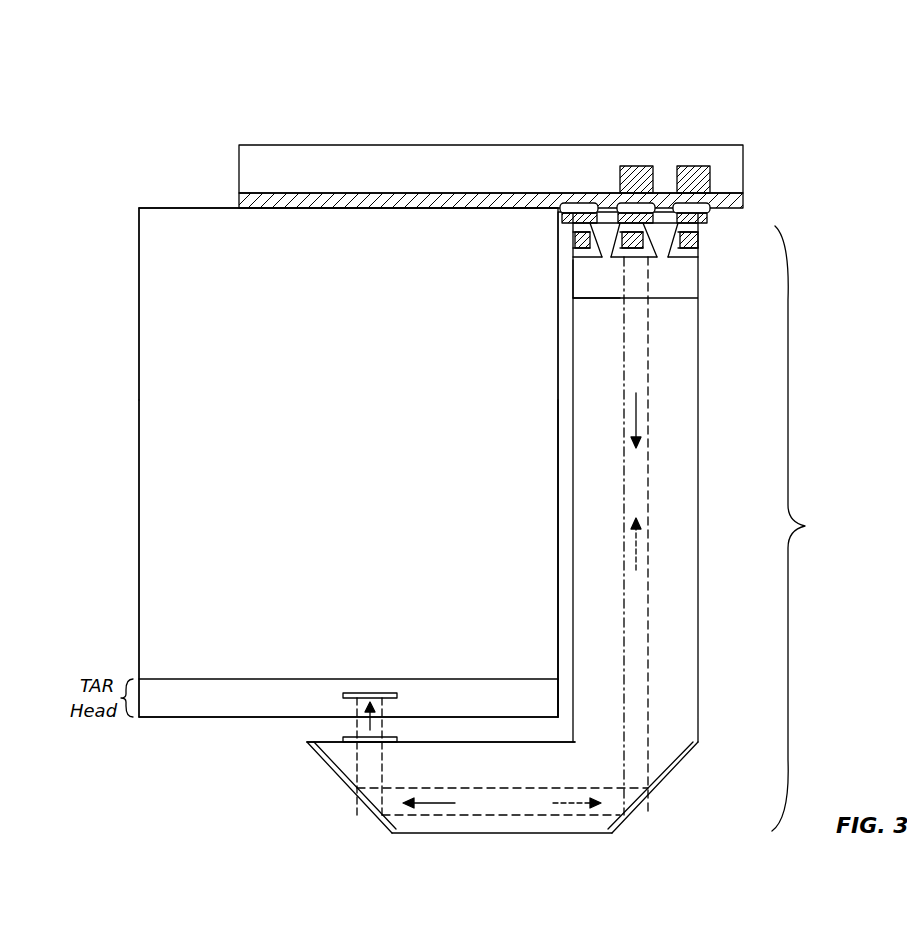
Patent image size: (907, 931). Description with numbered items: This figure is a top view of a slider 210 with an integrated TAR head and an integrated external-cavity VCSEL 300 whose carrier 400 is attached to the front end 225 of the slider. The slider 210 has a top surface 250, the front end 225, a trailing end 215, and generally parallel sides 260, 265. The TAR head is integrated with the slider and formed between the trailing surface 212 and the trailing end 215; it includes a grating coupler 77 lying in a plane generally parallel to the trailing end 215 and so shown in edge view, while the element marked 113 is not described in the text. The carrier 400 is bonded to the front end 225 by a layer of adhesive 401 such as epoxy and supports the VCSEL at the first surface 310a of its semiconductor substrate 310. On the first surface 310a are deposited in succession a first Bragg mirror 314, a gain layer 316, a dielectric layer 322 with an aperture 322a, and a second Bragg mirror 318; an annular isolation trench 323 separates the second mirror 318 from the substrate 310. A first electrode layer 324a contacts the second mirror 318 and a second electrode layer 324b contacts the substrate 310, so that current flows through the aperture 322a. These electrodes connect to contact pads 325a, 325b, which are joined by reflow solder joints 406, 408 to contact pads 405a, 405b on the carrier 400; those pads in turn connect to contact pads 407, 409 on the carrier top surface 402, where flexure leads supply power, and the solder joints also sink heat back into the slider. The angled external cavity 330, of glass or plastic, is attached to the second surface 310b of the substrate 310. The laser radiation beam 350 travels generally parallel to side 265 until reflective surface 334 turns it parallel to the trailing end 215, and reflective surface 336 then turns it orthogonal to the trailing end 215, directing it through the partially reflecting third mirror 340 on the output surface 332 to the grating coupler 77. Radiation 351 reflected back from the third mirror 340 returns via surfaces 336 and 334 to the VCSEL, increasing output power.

The slider 210 is at (348, 462).
The front end 225 is at (159, 207).
The top surface 250 is at (153, 303).
The side 260 is at (149, 490).
The trailing surface 212 is at (248, 678).
The trailing end 215 is at (227, 720).
The TAR head side 113 is at (530, 692).
The grating coupler 77 is at (370, 693).
The output surface 332 is at (327, 740).
The carrier 400 is at (500, 133).
The top surface 402 is at (357, 160).
The layer of adhesive 401 is at (238, 202).
The contact pad 405a is at (692, 166).
The contact pad 405b is at (622, 181).
The reflow solder joint 406 is at (636, 200).
The contact pad 407 is at (656, 196).
The reflow solder joint 408 is at (564, 203).
The contact pad 409 is at (705, 205).
The external-cavity VCSEL 300 is at (567, 445).
The semiconductor substrate 310 is at (690, 280).
The first surface 310a is at (575, 283).
The second surface 310b is at (590, 300).
The first Bragg mirror 314 is at (700, 256).
The gain layer 316 is at (700, 246).
The second Bragg mirror 318 is at (702, 226).
The dielectric layer 322 is at (598, 238).
The aperture 322a is at (665, 250).
The annular isolation trench 323 is at (600, 228).
The first electrode layer 324a is at (620, 227).
The second electrode layer 324b is at (700, 233).
The contact pad 325a is at (645, 213).
The contact pad 325b is at (560, 217).
The angled external cavity 330 is at (587, 473).
The reflective surface 334 is at (643, 803).
The reflective surface 336 is at (364, 803).
The partially reflecting third mirror 340 is at (343, 770).
The side 265 is at (556, 530).
The laser radiation beam 350 is at (623, 340).
The reflected radiation 351 is at (637, 543).